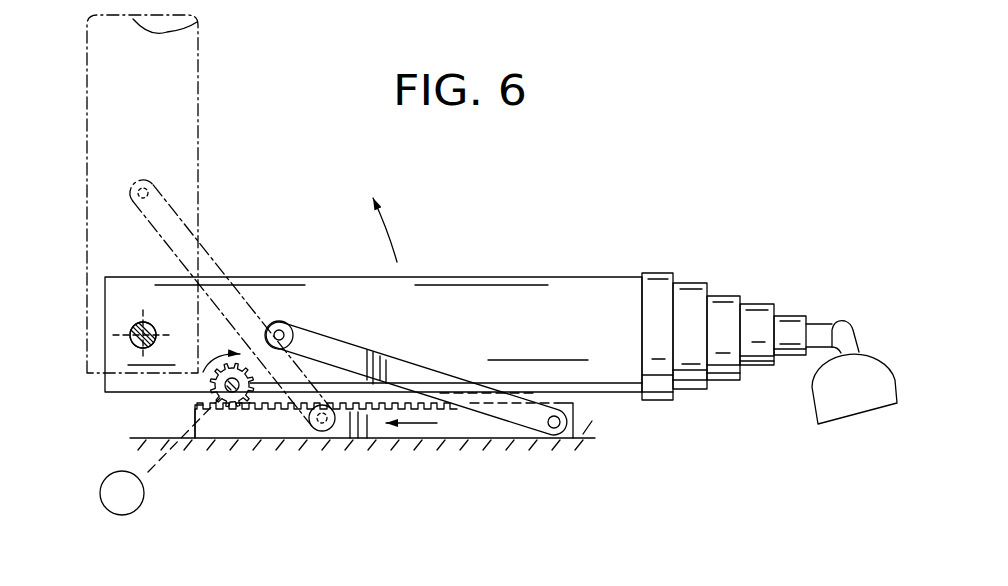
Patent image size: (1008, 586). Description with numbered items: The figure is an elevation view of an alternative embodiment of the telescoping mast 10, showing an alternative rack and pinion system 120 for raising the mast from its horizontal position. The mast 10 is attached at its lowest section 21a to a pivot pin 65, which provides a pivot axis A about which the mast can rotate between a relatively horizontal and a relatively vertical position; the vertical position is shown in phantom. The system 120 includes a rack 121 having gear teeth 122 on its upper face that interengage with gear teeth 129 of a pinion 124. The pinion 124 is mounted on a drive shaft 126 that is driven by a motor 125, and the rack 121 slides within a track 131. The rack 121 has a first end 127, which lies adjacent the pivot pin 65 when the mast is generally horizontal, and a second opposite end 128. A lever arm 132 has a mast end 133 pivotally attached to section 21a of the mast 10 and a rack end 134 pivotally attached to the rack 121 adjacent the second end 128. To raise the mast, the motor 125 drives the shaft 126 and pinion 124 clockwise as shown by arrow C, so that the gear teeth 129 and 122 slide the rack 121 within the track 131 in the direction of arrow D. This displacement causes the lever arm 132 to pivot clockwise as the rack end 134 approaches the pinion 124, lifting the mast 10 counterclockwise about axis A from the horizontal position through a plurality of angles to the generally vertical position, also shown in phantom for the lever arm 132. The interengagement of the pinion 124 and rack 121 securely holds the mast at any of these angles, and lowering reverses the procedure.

The telescoping mast 10 is at (205, 70).
The mast section 21a is at (192, 115).
The pivot pin 65 is at (133, 318).
The pivot axis A is at (133, 333).
The arrow C (clockwise pinion rotation direction) C is at (200, 356).
The arrow D (rack sliding direction) D is at (412, 423).
The rack and pinion system 120 is at (488, 451).
The rack 121 is at (452, 432).
The gear teeth 122 is at (358, 400).
The pinion 124 is at (245, 400).
The motor 125 is at (105, 500).
The drive shaft 126 is at (229, 393).
The first end 127 is at (193, 417).
The second opposite end 128 is at (573, 407).
The gear teeth 129 is at (213, 383).
The track 131 is at (592, 421).
The lever arm 132 is at (207, 258).
The mast end 133 is at (280, 321).
The rack end 134 is at (563, 440).